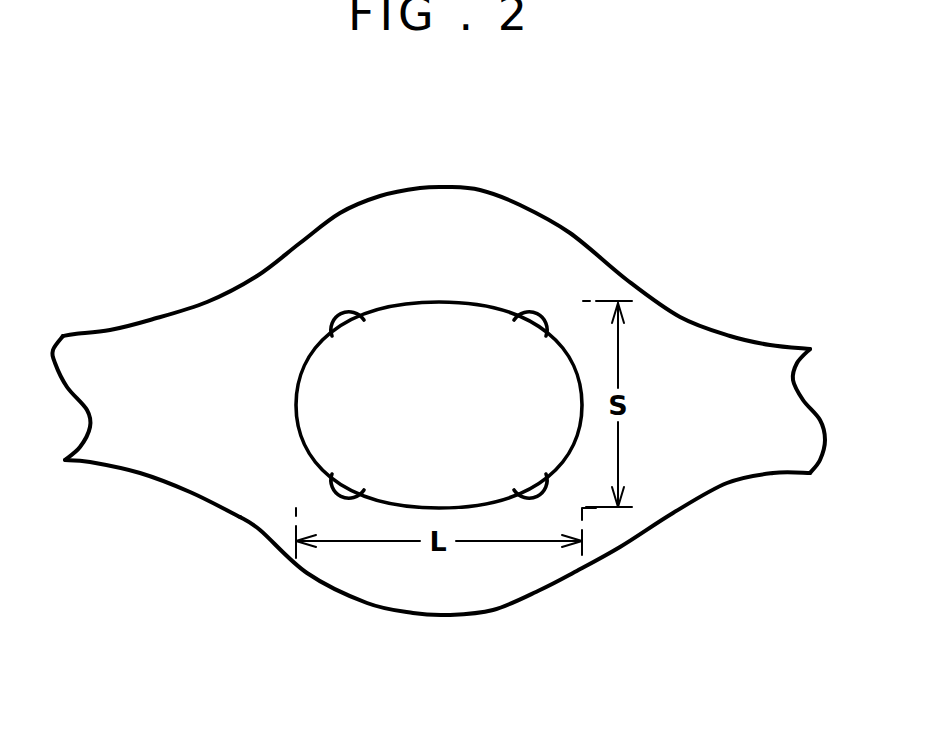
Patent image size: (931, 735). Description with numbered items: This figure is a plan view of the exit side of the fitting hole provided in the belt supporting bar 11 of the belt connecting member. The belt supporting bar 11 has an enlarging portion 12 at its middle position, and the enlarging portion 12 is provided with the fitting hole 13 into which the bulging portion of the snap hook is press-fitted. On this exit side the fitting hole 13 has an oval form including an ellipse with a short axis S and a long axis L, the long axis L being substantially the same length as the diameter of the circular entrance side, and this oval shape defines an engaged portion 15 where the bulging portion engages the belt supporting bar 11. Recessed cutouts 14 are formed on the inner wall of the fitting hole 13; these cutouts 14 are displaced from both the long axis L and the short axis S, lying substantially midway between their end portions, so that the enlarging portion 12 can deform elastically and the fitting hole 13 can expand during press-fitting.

The belt supporting bar 11 is at (438, 416).
The enlarging portion 12 is at (340, 212).
The fitting hole 13 is at (439, 303).
The recessed cutouts 14 is at (540, 320).
The engaged portion 15 is at (462, 300).